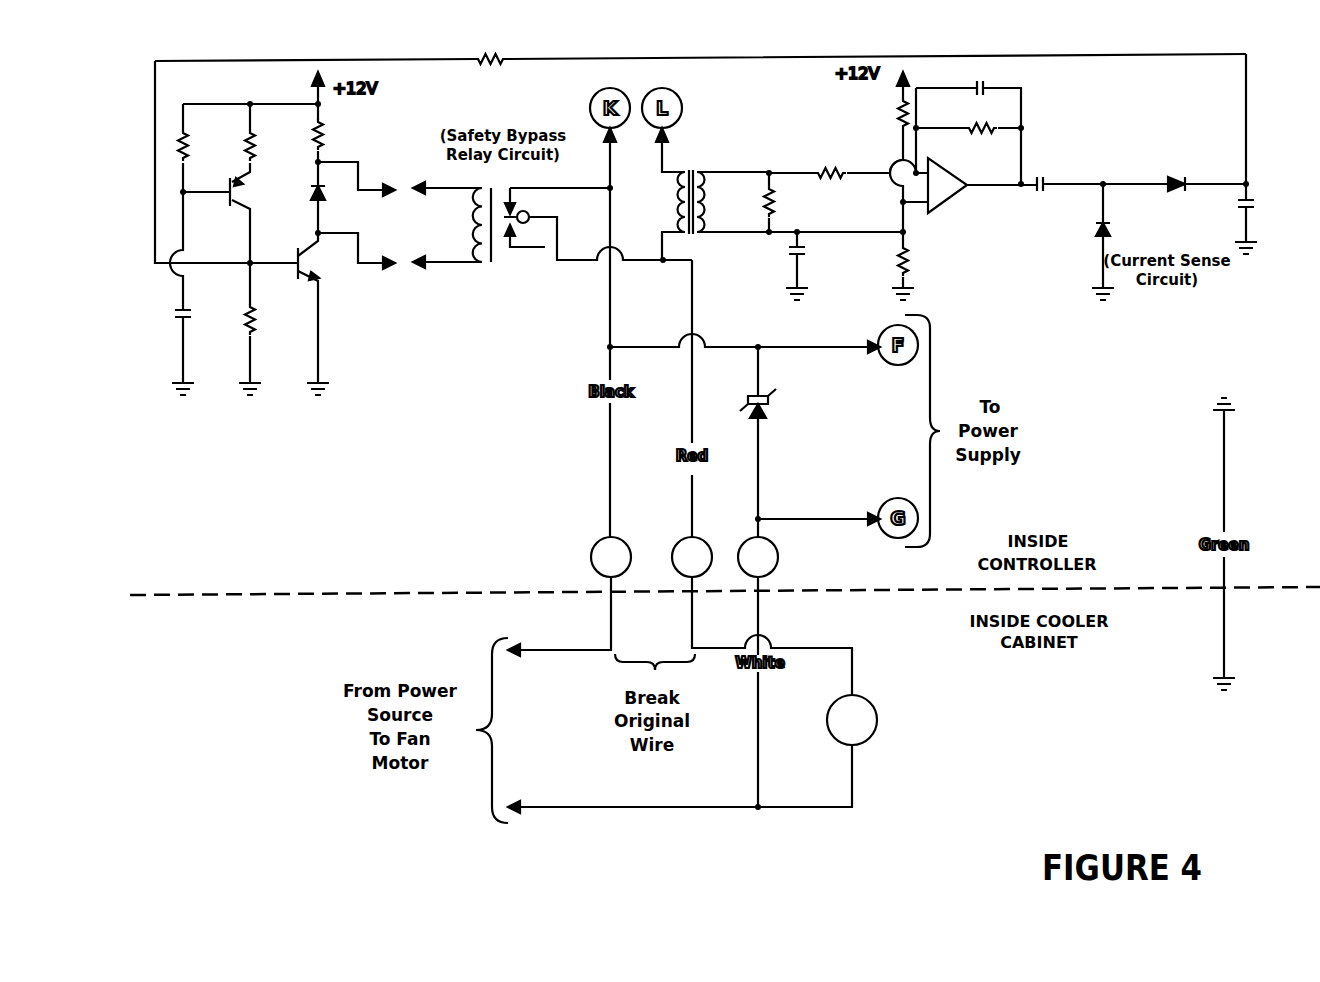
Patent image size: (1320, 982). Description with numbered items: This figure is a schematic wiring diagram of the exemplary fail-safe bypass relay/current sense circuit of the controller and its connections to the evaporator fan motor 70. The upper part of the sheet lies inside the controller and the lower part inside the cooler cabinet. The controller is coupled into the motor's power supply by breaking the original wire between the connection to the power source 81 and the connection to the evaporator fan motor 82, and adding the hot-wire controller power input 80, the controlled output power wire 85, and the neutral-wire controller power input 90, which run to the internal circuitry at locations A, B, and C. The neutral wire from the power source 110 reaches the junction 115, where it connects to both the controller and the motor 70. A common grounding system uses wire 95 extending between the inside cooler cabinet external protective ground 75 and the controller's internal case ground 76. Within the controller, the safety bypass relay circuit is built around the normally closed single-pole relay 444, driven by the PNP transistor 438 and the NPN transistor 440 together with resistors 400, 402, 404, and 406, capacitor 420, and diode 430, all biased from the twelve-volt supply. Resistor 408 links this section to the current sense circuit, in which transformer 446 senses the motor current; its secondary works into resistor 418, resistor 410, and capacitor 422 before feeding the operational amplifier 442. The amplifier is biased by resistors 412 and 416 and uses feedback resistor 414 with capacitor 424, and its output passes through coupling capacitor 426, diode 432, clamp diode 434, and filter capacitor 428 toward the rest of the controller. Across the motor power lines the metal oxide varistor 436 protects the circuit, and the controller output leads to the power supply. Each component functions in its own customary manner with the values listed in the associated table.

The evaporator fan motor 70 is at (875, 737).
The external protective ground 75 is at (1229, 690).
The internal case ground 76 is at (1226, 400).
The controller power input (hot wire) 80 is at (611, 507).
The connection to power source 81 is at (611, 652).
The connection to evaporator fan motor 82 is at (692, 646).
The output power from controller 85 is at (692, 479).
The controller power input (neutral wire) 90 is at (761, 478).
The wire connection between internal and external protective ground 95 is at (1223, 514).
The neutral wire from power source 110 is at (628, 808).
The connection of neutral wire to controller and evaporator fan motor 115 is at (760, 810).
The resistor 400 is at (241, 334).
The resistor 402 is at (263, 148).
The resistor 404 is at (167, 147).
The resistor 406 is at (333, 131).
The resistor 408 is at (487, 73).
The resistor 410 is at (836, 160).
The resistor 412 is at (891, 110).
The resistor 414 is at (977, 130).
The resistor 416 is at (919, 258).
The resistor 418 is at (781, 205).
The capacitor 420 is at (169, 328).
The capacitor 422 is at (776, 256).
The capacitor 424 is at (994, 66).
The capacitor 426 is at (1044, 161).
The capacitor 428 is at (1264, 203).
The diode 430 is at (333, 194).
The diode 432 is at (1181, 167).
The diode 434 is at (1096, 235).
The metal oxide varistor 436 is at (771, 405).
The PNP transistor 438 is at (263, 215).
The NPN transistor 440 is at (320, 272).
The operational amplifier 442 is at (938, 199).
The relay 444 is at (505, 263).
The transformer 446 is at (694, 167).